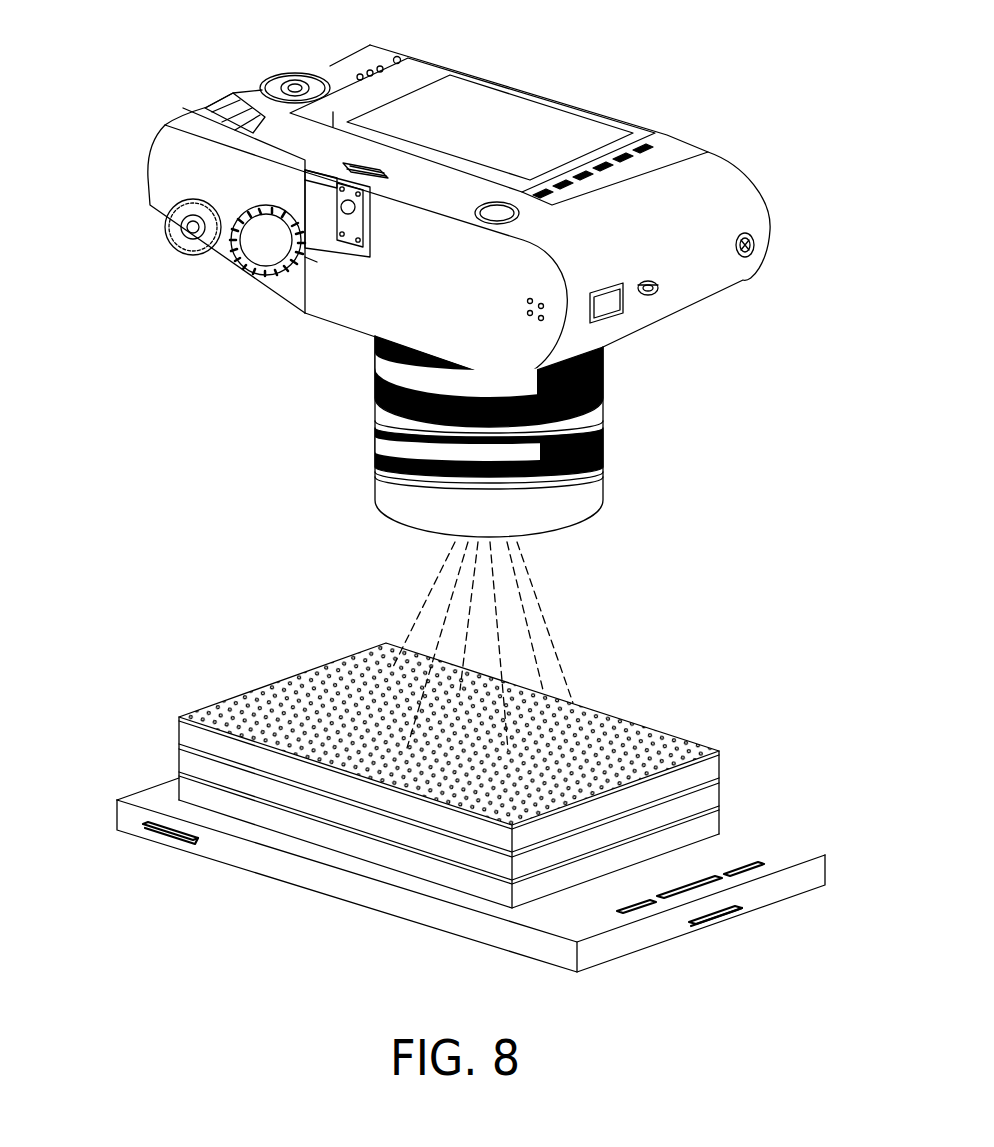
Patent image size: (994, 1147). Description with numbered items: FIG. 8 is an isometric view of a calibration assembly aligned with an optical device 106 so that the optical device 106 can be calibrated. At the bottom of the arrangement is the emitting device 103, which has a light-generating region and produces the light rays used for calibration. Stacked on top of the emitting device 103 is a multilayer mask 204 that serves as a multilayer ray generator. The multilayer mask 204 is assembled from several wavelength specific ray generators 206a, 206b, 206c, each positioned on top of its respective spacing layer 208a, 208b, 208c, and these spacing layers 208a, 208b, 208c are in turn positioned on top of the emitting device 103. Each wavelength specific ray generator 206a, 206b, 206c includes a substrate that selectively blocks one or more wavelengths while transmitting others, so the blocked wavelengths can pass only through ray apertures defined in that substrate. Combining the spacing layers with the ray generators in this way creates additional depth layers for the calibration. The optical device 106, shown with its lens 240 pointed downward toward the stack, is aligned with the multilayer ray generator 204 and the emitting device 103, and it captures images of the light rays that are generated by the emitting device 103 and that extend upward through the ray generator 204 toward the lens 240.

The optical device 106 is at (702, 302).
The lens 240 is at (606, 470).
The multilayer mask 204 is at (677, 730).
The wavelength specific ray generator 206a is at (613, 727).
The wavelength specific ray generator 206b is at (187, 768).
The wavelength specific ray generator 206c is at (286, 807).
The spacing layer 208a is at (185, 724).
The spacing layer 208b is at (207, 777).
The spacing layer 208c is at (374, 851).
The emitting device 103 is at (743, 840).